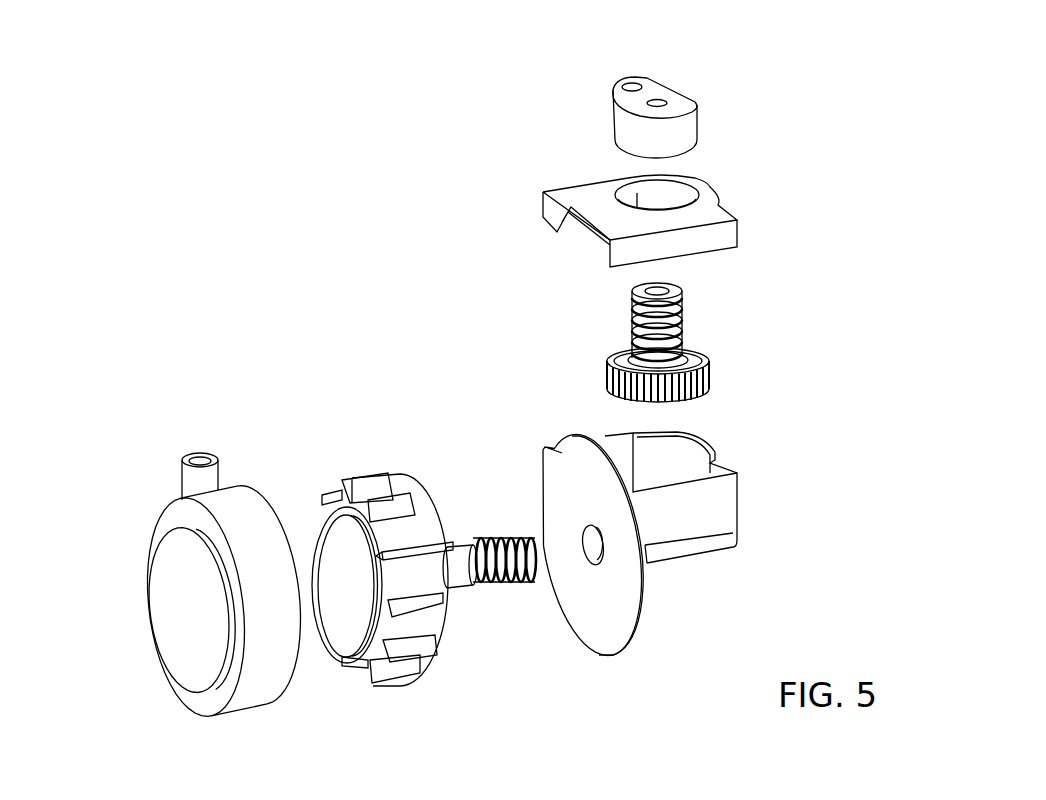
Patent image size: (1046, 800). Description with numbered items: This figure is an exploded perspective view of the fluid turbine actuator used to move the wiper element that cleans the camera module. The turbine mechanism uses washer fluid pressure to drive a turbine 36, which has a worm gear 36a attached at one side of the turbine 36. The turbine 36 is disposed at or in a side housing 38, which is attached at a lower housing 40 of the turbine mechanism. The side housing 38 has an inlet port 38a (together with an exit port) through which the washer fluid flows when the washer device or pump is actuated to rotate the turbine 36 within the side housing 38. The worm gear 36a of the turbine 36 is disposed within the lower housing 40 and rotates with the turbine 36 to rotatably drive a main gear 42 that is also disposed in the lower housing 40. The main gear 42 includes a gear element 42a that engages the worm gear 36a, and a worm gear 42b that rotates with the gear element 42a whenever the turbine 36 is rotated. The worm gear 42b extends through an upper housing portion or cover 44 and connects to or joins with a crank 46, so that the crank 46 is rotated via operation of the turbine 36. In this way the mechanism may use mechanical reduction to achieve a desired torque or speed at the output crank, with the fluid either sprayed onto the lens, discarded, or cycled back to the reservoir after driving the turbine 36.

The turbine 36 is at (362, 483).
The worm gear 36a is at (495, 543).
The side housing 38 is at (185, 622).
The inlet port 38a is at (185, 472).
The lower housing 40 is at (711, 520).
The main gear 42 is at (727, 360).
The gear element 42a is at (607, 368).
The worm gear 42b is at (680, 304).
The upper housing portion or cover 44 is at (710, 212).
The crank 46 is at (688, 117).